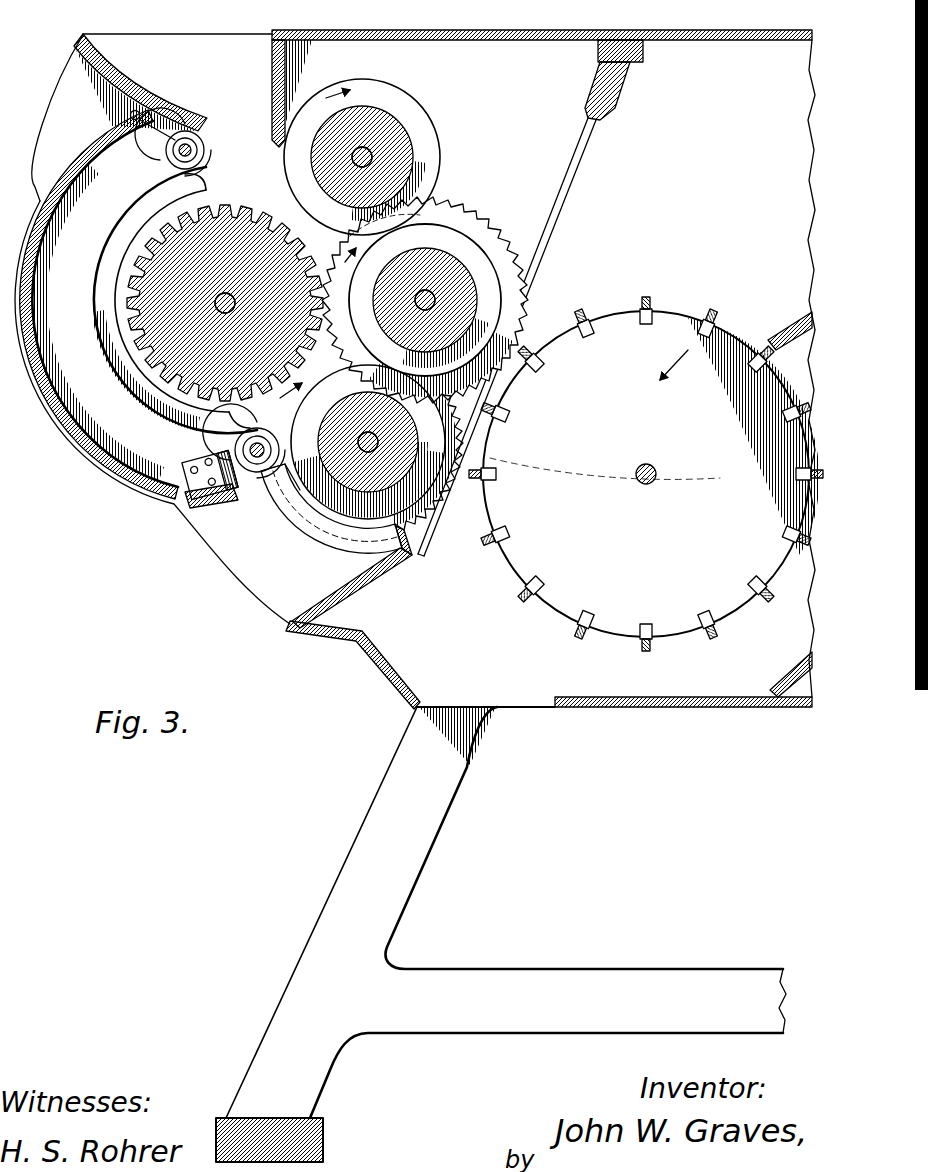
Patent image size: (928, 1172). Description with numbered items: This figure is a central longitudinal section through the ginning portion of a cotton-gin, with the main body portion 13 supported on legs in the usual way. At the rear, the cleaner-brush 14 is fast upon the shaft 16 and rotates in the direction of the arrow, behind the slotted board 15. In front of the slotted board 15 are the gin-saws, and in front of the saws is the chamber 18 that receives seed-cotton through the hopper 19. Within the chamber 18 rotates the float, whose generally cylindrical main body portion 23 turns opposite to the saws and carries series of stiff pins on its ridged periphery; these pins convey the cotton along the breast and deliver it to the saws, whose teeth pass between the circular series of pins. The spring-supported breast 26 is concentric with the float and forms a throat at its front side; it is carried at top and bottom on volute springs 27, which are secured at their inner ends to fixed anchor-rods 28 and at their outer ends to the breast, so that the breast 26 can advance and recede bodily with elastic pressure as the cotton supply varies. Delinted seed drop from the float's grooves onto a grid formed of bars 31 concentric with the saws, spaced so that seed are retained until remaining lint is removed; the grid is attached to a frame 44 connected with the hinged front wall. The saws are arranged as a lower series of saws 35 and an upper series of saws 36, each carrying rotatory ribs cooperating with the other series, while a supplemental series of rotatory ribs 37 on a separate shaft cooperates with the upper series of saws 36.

The main body portion 13 is at (415, 596).
The cleaner-brush 14 is at (646, 474).
The slotted board 15 is at (530, 298).
The shaft 16 is at (658, 468).
The chamber 18 is at (250, 170).
The hopper 19 is at (164, 82).
The main body portion of the float 23 is at (180, 343).
The spring-supported breast 26 is at (118, 340).
The volute springs 27 is at (176, 152).
The anchor-rods 28 is at (196, 150).
The bars 31 is at (308, 533).
The lower series of saws 35 is at (272, 484).
The upper series of saws 36 is at (470, 215).
The supplemental series of rotatory ribs 37 is at (408, 115).
The frame 44 is at (155, 565).